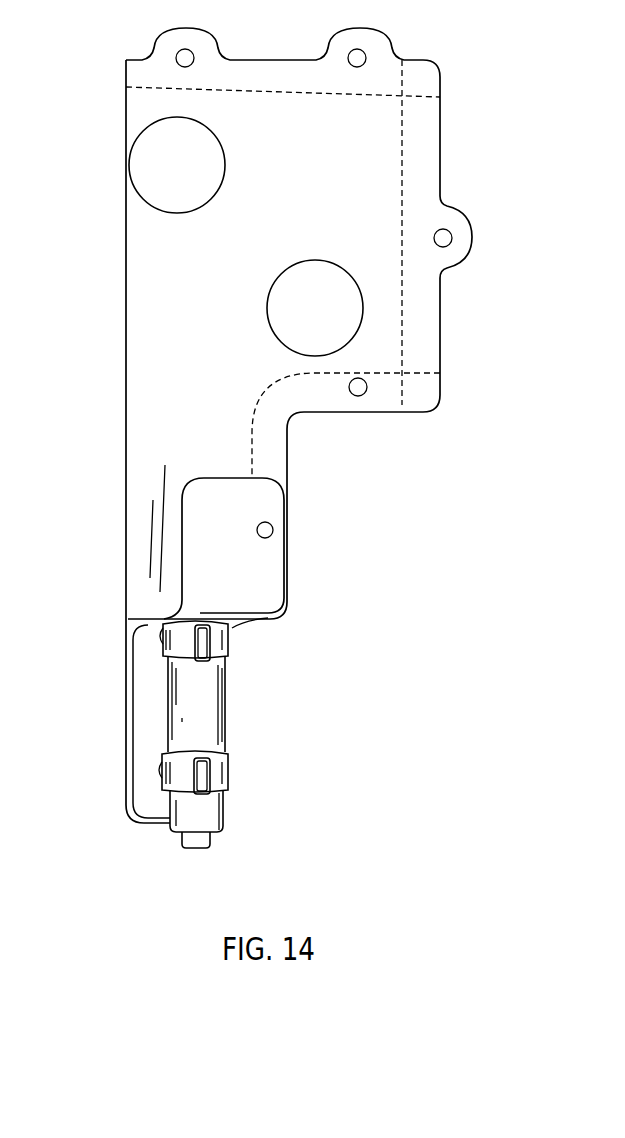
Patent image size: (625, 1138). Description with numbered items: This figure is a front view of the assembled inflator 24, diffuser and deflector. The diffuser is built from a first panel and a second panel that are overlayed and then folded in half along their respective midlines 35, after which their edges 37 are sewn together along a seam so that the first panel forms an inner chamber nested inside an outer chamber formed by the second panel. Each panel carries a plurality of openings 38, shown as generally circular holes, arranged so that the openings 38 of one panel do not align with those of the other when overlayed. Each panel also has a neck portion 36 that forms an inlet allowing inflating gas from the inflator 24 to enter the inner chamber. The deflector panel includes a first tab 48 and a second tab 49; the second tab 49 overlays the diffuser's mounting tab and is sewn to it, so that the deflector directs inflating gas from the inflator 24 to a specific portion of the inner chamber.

The midline 35 is at (126, 437).
The neck portion 36 is at (275, 453).
The edges 37 is at (402, 155).
The openings 38 is at (285, 307).
The first tab 48 is at (272, 565).
The second tab 49 is at (270, 712).
The inflator 24 is at (210, 820).